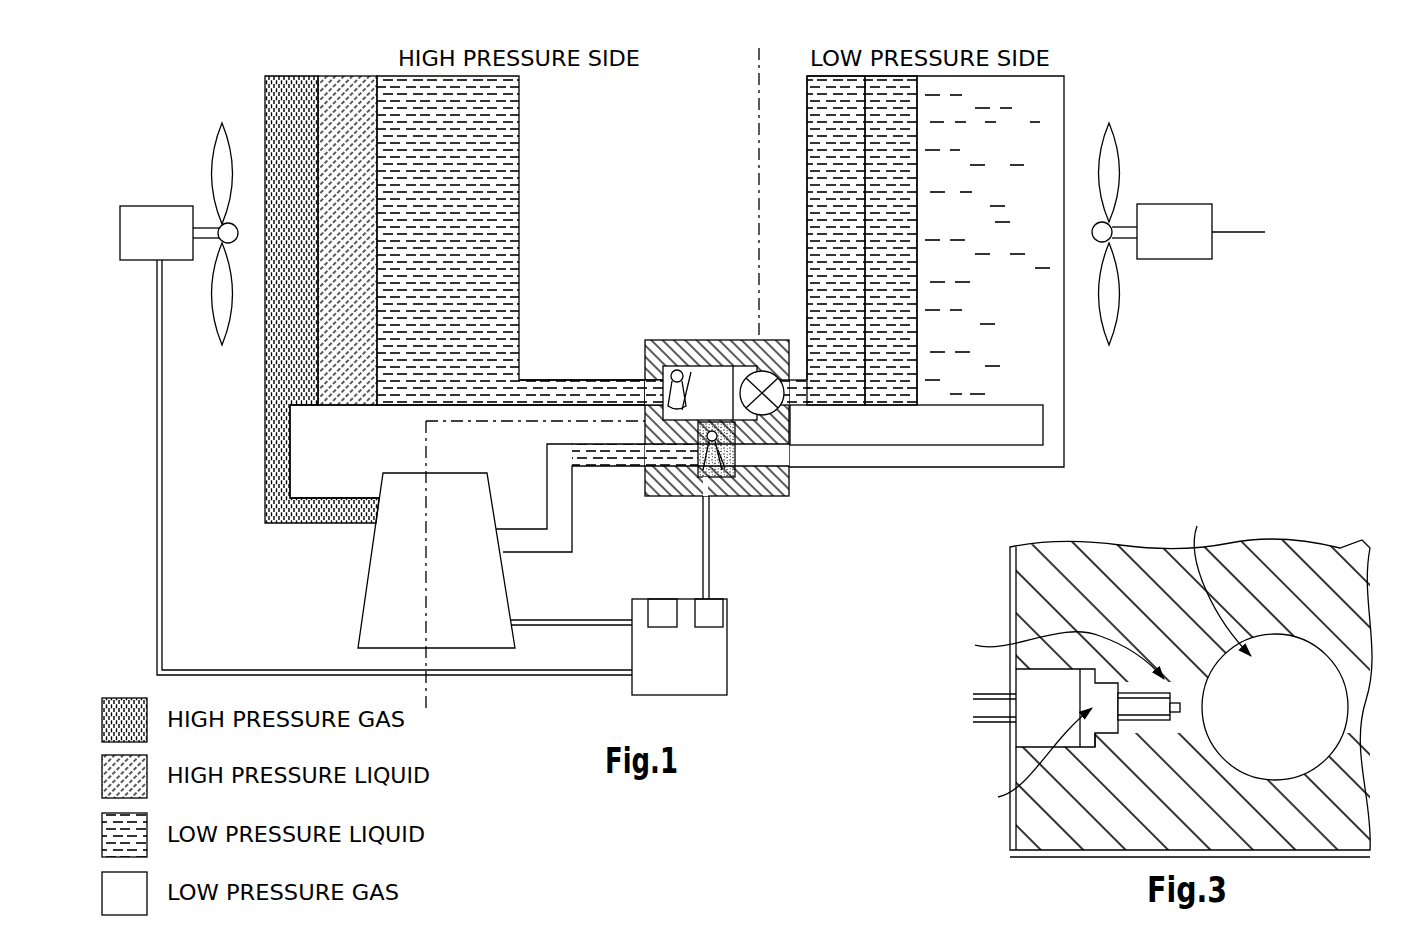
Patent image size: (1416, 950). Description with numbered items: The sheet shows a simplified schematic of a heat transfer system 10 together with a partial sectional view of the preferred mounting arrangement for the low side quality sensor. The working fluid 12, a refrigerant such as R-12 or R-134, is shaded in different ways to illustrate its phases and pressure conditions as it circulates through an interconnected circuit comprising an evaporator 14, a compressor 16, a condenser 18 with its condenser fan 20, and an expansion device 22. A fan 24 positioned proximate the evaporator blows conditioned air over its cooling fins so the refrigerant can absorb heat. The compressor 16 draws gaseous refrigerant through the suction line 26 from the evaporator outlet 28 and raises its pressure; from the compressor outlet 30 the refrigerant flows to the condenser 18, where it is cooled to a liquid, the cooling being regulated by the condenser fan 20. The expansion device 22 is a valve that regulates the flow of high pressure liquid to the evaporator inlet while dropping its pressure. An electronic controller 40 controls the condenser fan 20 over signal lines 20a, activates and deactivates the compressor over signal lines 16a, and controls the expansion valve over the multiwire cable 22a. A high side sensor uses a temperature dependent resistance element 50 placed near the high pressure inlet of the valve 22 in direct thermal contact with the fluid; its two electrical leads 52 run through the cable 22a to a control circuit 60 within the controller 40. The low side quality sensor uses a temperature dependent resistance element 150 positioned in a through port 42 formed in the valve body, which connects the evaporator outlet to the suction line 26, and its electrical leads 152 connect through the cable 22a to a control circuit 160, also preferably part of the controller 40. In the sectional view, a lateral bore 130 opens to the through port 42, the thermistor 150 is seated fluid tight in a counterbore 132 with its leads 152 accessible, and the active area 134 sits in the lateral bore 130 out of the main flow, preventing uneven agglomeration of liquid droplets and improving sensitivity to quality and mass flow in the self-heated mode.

In FIG. 1, the heat transfer system 10 is at (748, 383).
In FIG. 1, the working fluid 12 is at (545, 395).
In FIG. 1, the evaporator 14 is at (1068, 105).
In FIG. 1, the compressor 16 is at (357, 547).
In FIG. 1, the signal lines 16a is at (620, 620).
In FIG. 1, the condenser 18 is at (336, 73).
In FIG. 1, the condenser fan 20 is at (152, 204).
In FIG. 1, the signal lines 20a is at (482, 675).
In FIG. 1, the expansion device 22 is at (742, 399).
In FIG. 3, the expansion device 22 is at (1147, 591).
In FIG. 1, the signal lines 22a is at (716, 540).
In FIG. 1, the fan 24 is at (1184, 201).
In FIG. 1, the suction line 26 is at (572, 548).
In FIG. 1, the evaporator outlet 28 is at (1052, 412).
In FIG. 1, the compressor outlet 30 is at (380, 500).
In FIG. 1, the electronic controller 40 is at (705, 625).
In FIG. 1, the through port 42 is at (776, 450).
In FIG. 3, the through port 42 is at (1340, 680).
In FIG. 1, the temperature dependent electrical resistance element 50 is at (693, 374).
In FIG. 1, the electrical leads 52 is at (660, 381).
In FIG. 1, the control circuit 60 is at (712, 612).
In FIG. 3, the lateral bore 130 is at (1180, 732).
In FIG. 3, the counterbore 132 is at (1090, 745).
In FIG. 3, the active area 134 is at (1191, 707).
In FIG. 1, the temperature dependent resistance element 150 is at (750, 458).
In FIG. 1, the electrical leads 152 is at (695, 450).
In FIG. 3, the electrical leads 152 is at (969, 703).
In FIG. 1, the control circuit 160 is at (665, 612).